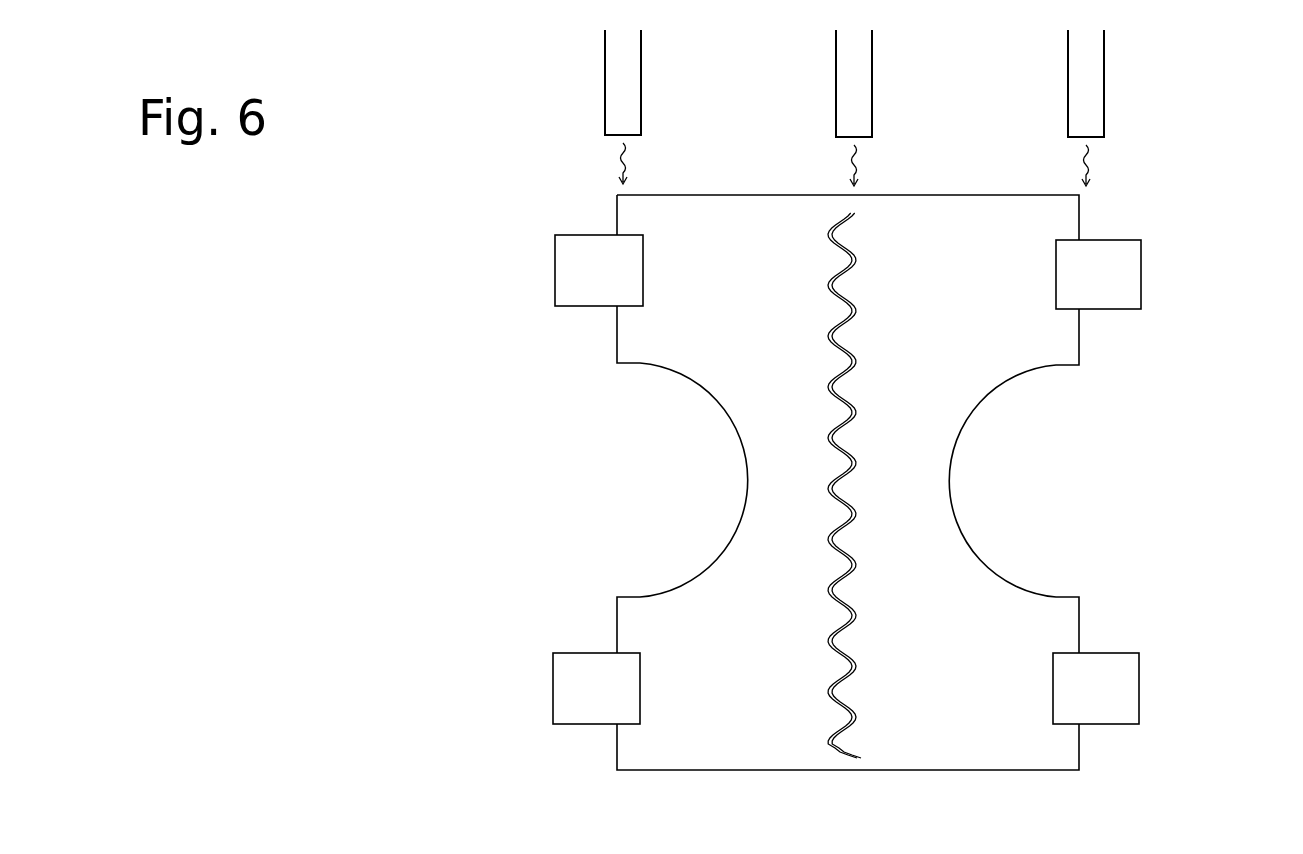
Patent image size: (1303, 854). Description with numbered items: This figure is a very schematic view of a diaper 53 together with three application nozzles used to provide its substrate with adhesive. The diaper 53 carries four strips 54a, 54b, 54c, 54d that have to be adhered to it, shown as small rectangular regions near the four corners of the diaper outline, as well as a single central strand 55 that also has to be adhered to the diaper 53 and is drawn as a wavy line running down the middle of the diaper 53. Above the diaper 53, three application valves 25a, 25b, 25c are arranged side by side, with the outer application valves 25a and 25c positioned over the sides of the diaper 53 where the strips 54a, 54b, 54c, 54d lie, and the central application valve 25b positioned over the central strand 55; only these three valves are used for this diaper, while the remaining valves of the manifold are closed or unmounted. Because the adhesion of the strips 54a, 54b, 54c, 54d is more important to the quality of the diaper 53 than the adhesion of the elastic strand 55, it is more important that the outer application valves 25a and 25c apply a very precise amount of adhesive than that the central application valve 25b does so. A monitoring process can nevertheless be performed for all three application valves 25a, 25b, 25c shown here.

The application valve 25a is at (623, 78).
The application valve 25b is at (853, 78).
The application valve 25c is at (1083, 88).
The diaper 53 is at (1003, 613).
The strip 54a is at (576, 271).
The strip 54b is at (576, 692).
The strip 54c is at (1120, 276).
The strip 54d is at (1107, 693).
The central strand 55 is at (853, 675).